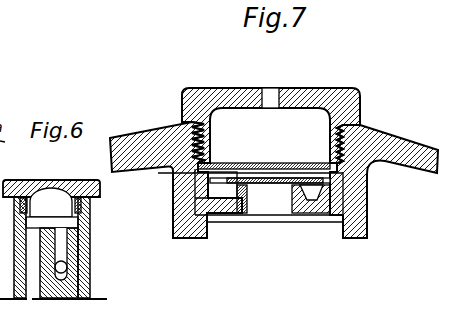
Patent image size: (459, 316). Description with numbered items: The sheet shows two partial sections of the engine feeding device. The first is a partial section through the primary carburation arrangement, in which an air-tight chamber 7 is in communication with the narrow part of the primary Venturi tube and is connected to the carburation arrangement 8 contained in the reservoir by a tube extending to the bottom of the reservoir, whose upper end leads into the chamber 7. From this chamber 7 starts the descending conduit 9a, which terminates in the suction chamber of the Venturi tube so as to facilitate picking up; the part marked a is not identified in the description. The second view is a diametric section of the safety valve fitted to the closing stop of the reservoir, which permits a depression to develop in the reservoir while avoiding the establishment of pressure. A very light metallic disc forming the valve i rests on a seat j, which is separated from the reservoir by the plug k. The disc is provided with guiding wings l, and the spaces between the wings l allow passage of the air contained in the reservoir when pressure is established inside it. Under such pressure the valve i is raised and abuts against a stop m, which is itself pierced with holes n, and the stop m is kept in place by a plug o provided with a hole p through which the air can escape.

In FIG. 6, the chamber 7 is at (45, 220).
In FIG. 7, the carburation arrangement 8 is at (378, 179).
In FIG. 6, the carburation arrangement 8 is at (35, 248).
In FIG. 6, the descending conduit 9a is at (63, 248).
In FIG. 6, the plug a is at (70, 293).
In FIG. 7, the hole p is at (279, 74).
In FIG. 7, the plug o is at (346, 75).
In FIG. 7, the holes n is at (233, 165).
In FIG. 7, the stop m is at (296, 177).
In FIG. 7, the valve i is at (272, 183).
In FIG. 7, the seat j is at (250, 172).
In FIG. 7, the guiding wings l is at (202, 200).
In FIG. 7, the plug k is at (408, 162).